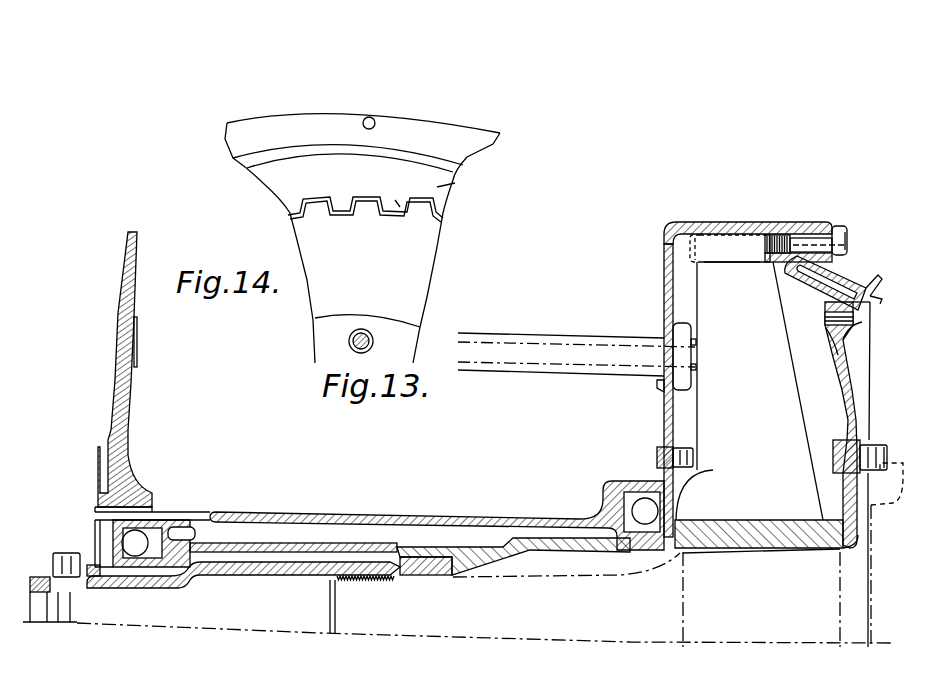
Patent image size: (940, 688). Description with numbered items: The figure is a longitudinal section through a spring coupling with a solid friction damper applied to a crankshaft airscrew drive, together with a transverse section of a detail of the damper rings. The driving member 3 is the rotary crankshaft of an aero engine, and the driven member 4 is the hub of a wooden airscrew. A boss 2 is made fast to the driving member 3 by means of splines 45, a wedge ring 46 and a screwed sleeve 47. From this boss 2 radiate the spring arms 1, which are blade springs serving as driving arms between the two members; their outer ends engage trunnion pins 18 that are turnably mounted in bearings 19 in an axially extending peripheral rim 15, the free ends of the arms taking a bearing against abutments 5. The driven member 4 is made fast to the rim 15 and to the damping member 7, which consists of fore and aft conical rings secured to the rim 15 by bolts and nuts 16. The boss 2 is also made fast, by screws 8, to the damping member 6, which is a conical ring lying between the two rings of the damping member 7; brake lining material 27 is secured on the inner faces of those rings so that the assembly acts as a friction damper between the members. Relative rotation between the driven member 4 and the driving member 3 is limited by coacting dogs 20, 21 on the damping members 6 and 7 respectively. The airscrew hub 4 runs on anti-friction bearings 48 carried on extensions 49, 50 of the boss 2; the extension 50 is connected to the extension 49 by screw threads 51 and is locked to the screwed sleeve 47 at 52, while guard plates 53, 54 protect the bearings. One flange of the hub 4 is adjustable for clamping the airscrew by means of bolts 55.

In FIG. 13, the spring arms 1 is at (708, 397).
In FIG. 13, the boss 2 is at (730, 530).
In FIG. 13, the driving member 3 is at (683, 620).
In FIG. 13, the driven member 4 is at (508, 517).
In FIG. 13, the abutments 5 is at (741, 256).
In FIG. 13, the damping member 6 is at (858, 300).
In FIG. 14, the damping member 7 is at (437, 187).
In FIG. 13, the damping member 7 is at (855, 278).
In FIG. 14, the screws 8 is at (348, 342).
In FIG. 13, the screws 8 is at (853, 457).
In FIG. 13, the peripheral rim 15 is at (690, 229).
In FIG. 14, the bolts and nuts 16 is at (375, 121).
In FIG. 13, the bolts and nuts 16 is at (820, 243).
In FIG. 13, the trunnion pins 18 is at (715, 263).
In FIG. 13, the bearings 19 is at (690, 247).
In FIG. 14, the dog 20 is at (367, 203).
In FIG. 13, the dog 20 is at (852, 335).
In FIG. 14, the dog 21 is at (397, 202).
In FIG. 13, the dog 21 is at (856, 307).
In FIG. 13, the brake lining material 27 is at (874, 292).
In FIG. 13, the splines 45 is at (733, 553).
In FIG. 13, the wedge ring 46 is at (417, 575).
In FIG. 13, the screwed sleeve 47 is at (367, 581).
In FIG. 13, the anti-friction bearings 48 is at (150, 545).
In FIG. 13, the extension 49 is at (455, 557).
In FIG. 13, the extension 50 is at (170, 586).
In FIG. 13, the screw threads 51 is at (240, 545).
In FIG. 13, the lock 52 is at (100, 580).
In FIG. 13, the guard plate 53 is at (673, 487).
In FIG. 13, the guard plate 54 is at (110, 560).
In FIG. 13, the bolts 55 is at (537, 343).